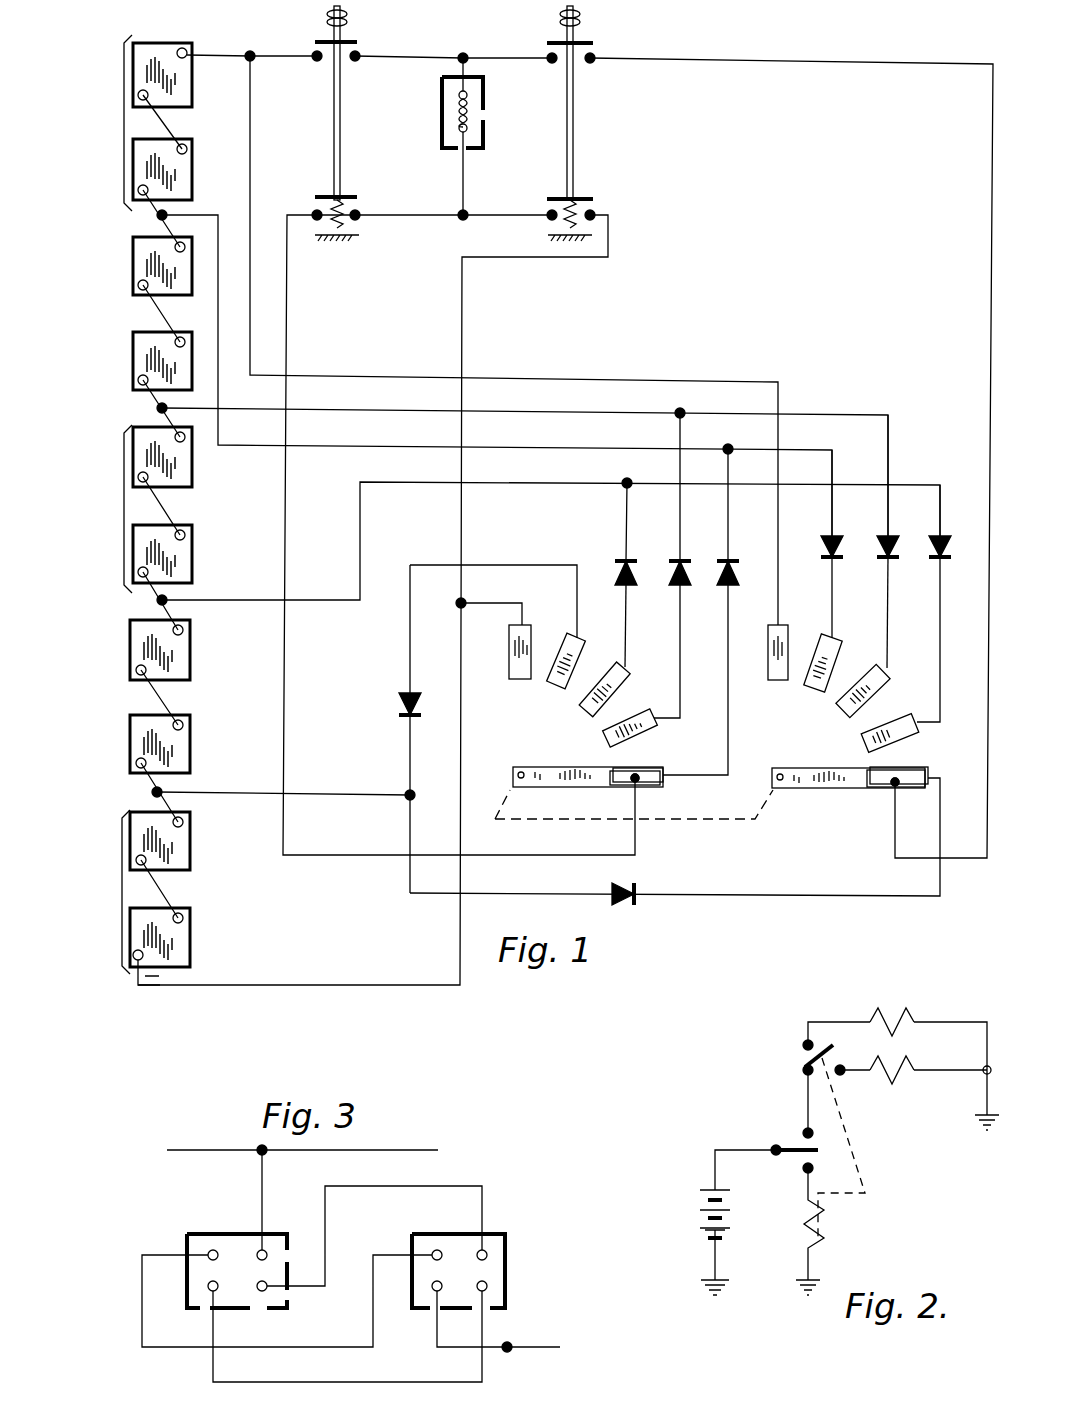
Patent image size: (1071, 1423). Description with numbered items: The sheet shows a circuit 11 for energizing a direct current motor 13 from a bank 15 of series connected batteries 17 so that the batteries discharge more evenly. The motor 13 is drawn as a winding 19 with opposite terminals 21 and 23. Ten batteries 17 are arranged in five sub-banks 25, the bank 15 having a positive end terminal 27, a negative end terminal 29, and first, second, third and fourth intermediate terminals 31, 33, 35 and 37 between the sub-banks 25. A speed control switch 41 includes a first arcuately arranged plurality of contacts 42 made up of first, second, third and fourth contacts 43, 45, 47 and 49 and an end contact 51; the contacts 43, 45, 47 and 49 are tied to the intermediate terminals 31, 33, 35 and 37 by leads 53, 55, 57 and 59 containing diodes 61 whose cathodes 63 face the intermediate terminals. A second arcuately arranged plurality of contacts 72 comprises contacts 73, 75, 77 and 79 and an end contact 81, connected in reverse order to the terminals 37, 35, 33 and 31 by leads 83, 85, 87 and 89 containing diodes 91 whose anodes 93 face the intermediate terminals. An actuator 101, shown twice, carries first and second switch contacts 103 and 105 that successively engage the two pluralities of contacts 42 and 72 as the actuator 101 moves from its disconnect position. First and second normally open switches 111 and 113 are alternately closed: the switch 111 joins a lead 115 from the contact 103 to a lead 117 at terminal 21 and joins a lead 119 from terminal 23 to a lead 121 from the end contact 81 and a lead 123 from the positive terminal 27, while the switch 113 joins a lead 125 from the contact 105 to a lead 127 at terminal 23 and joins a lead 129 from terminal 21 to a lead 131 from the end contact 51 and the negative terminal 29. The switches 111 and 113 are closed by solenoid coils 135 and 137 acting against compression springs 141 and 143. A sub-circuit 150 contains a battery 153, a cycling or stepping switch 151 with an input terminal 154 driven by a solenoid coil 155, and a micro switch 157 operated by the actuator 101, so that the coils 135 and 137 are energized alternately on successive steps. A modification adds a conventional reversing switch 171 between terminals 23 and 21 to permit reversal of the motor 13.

In FIG. 1, the circuit 11 is at (766, 926).
In FIG. 1, the direct current motor 13 is at (484, 136).
In FIG. 3, the direct current motor 13 is at (192, 1224).
In FIG. 1, the bank of batteries 15 is at (122, 326).
In FIG. 1, the batteries 17 is at (190, 144).
In FIG. 1, the winding 19 is at (440, 118).
In FIG. 1, the motor terminal 21 is at (459, 220).
In FIG. 3, the motor terminal 21 is at (509, 1354).
In FIG. 1, the motor terminal 23 is at (464, 54).
In FIG. 3, the motor terminal 23 is at (258, 1156).
In FIG. 1, the sub-banks 25 is at (116, 122).
In FIG. 1, the positive end terminal 27 is at (182, 52).
In FIG. 1, the negative end terminal 29 is at (138, 970).
In FIG. 1, the first intermediate terminal 31 is at (156, 216).
In FIG. 1, the second intermediate terminal 33 is at (158, 410).
In FIG. 1, the third intermediate terminal 35 is at (158, 602).
In FIG. 1, the fourth intermediate terminal 37 is at (155, 794).
In FIG. 1, the speed control switch 41 is at (720, 874).
In FIG. 1, the first arcuately arranged plurality of contacts 42 is at (527, 746).
In FIG. 1, the first contact 43 is at (656, 764).
In FIG. 1, the second contact 45 is at (604, 746).
In FIG. 1, the third contact 47 is at (586, 714).
In FIG. 1, the fourth contact 49 is at (551, 692).
In FIG. 1, the last or end contact 51 is at (510, 670).
In FIG. 1, the lead 53 is at (726, 742).
In FIG. 1, the lead 55 is at (680, 680).
In FIG. 1, the lead 57 is at (628, 634).
In FIG. 1, the lead 59 is at (576, 607).
In FIG. 1, the diodes 61 is at (626, 588).
In FIG. 1, the cathodes 63 is at (626, 560).
In FIG. 1, the second arcuately arranged plurality of contacts 72 is at (802, 726).
In FIG. 1, the first contact 73 is at (919, 762).
In FIG. 1, the second contact 75 is at (919, 731).
In FIG. 1, the third contact 77 is at (876, 670).
In FIG. 1, the fourth contact 79 is at (833, 640).
In FIG. 1, the second last or end contact 81 is at (767, 628).
In FIG. 1, the lead 83 is at (942, 886).
In FIG. 1, the lead 85 is at (937, 660).
In FIG. 1, the lead 87 is at (885, 606).
In FIG. 1, the lead 89 is at (833, 596).
In FIG. 1, the diodes 91 is at (836, 566).
In FIG. 1, the anodes 93 is at (872, 534).
In FIG. 1, the actuator 101 is at (755, 799).
In FIG. 1, the first switch contact 103 is at (626, 782).
In FIG. 1, the second switch contact 105 is at (884, 783).
In FIG. 1, the first normally open switch 111 is at (314, 157).
In FIG. 1, the second normally open switch 113 is at (575, 152).
In FIG. 1, the lead 115 is at (285, 336).
In FIG. 1, the lead 117 is at (408, 214).
In FIG. 1, the lead 119 is at (410, 66).
In FIG. 3, the lead 119 is at (170, 1152).
In FIG. 1, the lead 121 is at (248, 131).
In FIG. 1, the lead 123 is at (215, 50).
In FIG. 1, the lead 125 is at (866, 830).
In FIG. 1, the lead 127 is at (515, 64).
In FIG. 3, the lead 127 is at (395, 1154).
In FIG. 1, the lead 129 is at (496, 210).
In FIG. 3, the lead 129 is at (565, 1328).
In FIG. 1, the lead 131 is at (610, 246).
In FIG. 1, the solenoid coil 135 is at (350, 19).
In FIG. 2, the solenoid coil 135 is at (893, 994).
In FIG. 1, the solenoid coil 137 is at (588, 19).
In FIG. 2, the solenoid coil 137 is at (887, 1046).
In FIG. 1, the compression spring 141 is at (348, 238).
In FIG. 1, the compression spring 143 is at (547, 238).
In FIG. 2, the sub-circuit 150 is at (928, 1129).
In FIG. 2, the cycling or stepping switch 151 is at (792, 1051).
In FIG. 2, the battery 153 is at (728, 1212).
In FIG. 2, the input terminal 154 is at (800, 1072).
In FIG. 2, the solenoid coil 155 is at (828, 1224).
In FIG. 2, the micro or other switch 157 is at (786, 1132).
In FIG. 3, the reversing switch 171 is at (511, 1242).